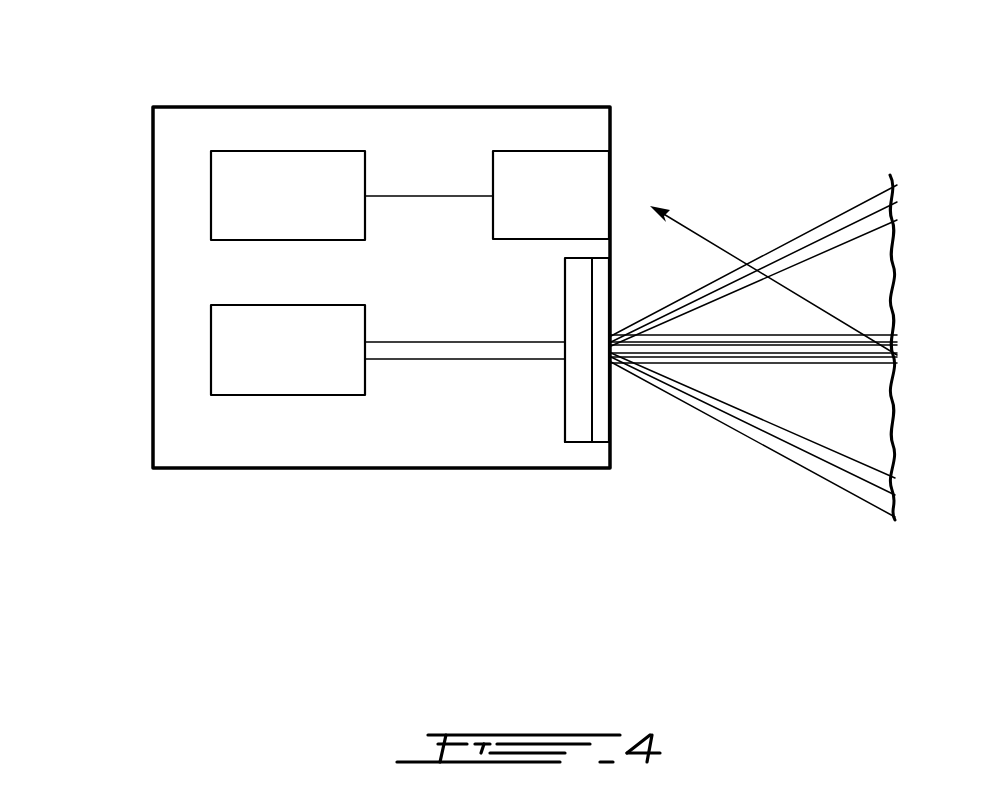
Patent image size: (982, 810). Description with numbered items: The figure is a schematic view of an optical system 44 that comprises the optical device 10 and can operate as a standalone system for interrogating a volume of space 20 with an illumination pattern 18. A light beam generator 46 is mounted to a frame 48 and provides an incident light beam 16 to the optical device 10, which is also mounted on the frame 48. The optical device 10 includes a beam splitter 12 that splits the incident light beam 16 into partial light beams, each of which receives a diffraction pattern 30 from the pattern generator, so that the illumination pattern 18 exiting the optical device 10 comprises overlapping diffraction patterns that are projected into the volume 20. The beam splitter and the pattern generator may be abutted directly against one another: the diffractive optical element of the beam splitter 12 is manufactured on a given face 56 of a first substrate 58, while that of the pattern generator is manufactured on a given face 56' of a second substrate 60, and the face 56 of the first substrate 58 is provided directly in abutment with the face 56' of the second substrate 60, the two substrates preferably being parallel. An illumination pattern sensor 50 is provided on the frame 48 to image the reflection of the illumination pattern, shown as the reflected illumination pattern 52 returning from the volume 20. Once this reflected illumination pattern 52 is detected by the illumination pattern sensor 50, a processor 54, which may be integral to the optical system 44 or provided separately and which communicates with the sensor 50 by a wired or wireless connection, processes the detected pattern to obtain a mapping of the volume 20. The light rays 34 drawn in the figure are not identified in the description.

The optical device 10 is at (575, 538).
The beam splitter 12 is at (565, 375).
The incident light beam 16 is at (425, 352).
The illumination pattern 18 is at (693, 386).
The volume of space 20 is at (905, 397).
The diffraction pattern 30 is at (843, 240).
The light rays 34 is at (810, 345).
The optical system 44 is at (177, 590).
The light beam generator 46 is at (288, 395).
The frame 48 is at (380, 107).
The illumination pattern sensor 50 is at (553, 151).
The reflected illumination pattern 52 is at (703, 238).
The processor 54 is at (290, 151).
The given face of the first substrate 56 is at (543, 351).
The given face of the second substrate 56' is at (634, 353).
The first substrate 58 is at (577, 442).
The second substrate 60 is at (602, 443).